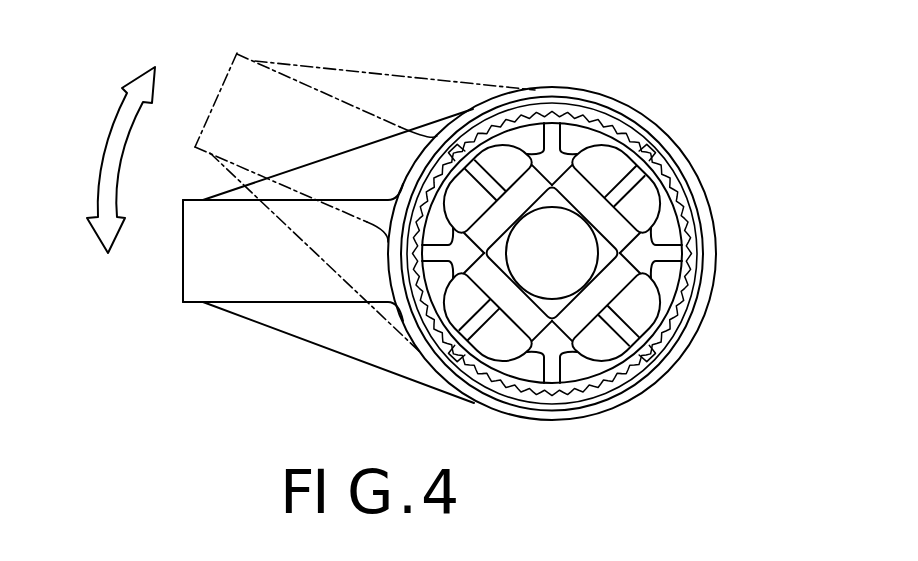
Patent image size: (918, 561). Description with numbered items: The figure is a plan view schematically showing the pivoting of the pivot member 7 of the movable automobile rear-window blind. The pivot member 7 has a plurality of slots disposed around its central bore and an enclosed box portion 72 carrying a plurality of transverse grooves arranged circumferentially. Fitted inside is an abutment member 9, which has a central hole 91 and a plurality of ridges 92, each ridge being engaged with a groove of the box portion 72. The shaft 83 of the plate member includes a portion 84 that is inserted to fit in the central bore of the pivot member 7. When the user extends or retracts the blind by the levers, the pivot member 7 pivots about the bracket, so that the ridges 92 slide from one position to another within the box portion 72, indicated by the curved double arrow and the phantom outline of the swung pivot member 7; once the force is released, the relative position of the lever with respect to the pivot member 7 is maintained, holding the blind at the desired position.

The pivot member 7 is at (277, 287).
The enclosed box portion 72 is at (484, 342).
The abutment member 9 is at (556, 166).
The ridges 92 is at (650, 140).
The central hole 91 is at (590, 226).
The portion of the shaft 84 is at (608, 262).
The shaft 83 is at (571, 283).